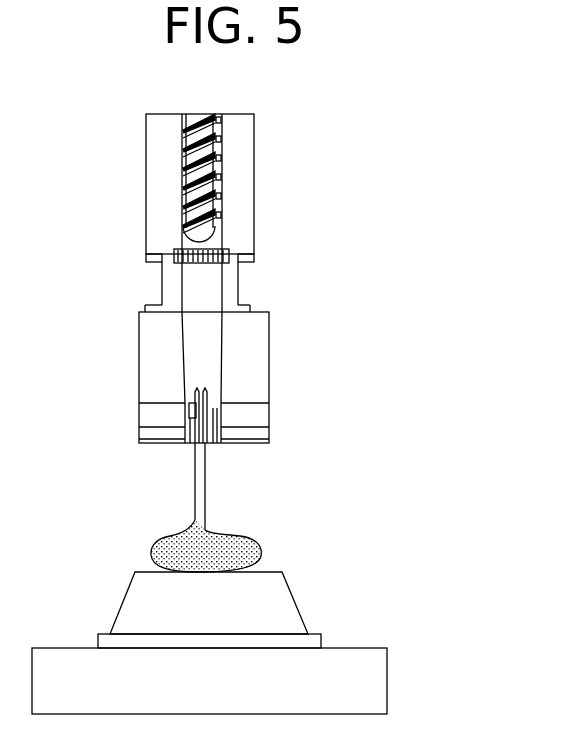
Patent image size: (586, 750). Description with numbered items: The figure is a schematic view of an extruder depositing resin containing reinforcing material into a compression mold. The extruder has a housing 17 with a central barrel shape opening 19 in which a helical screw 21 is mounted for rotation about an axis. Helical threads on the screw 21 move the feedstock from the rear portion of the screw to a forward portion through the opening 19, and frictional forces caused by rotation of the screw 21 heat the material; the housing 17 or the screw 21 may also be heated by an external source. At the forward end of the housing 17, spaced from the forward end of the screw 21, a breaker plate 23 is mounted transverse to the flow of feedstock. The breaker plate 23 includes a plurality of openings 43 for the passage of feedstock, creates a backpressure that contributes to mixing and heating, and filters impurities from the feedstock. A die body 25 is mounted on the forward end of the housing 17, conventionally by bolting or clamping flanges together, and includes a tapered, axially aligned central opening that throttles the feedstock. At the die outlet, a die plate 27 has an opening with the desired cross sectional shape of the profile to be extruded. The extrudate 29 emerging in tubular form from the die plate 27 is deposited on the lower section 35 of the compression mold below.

The housing 17 is at (254, 207).
The central barrel shape opening 19 is at (222, 178).
The helical screw 21 is at (222, 133).
The breaker plate 23 is at (230, 253).
The openings 43 is at (225, 263).
The die body 25 is at (269, 356).
The die plate 27 is at (269, 430).
The extrudate 29 is at (207, 497).
The lower section 35 is at (387, 668).